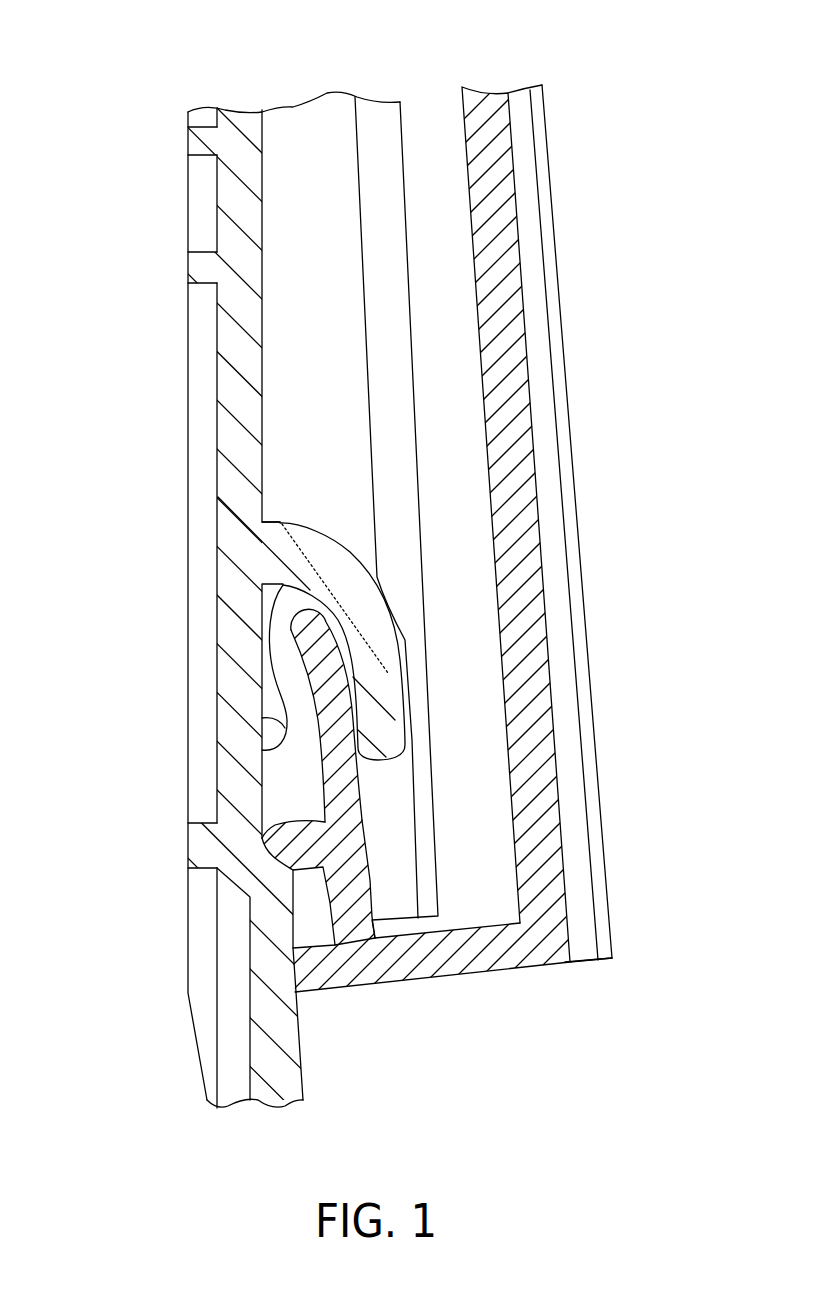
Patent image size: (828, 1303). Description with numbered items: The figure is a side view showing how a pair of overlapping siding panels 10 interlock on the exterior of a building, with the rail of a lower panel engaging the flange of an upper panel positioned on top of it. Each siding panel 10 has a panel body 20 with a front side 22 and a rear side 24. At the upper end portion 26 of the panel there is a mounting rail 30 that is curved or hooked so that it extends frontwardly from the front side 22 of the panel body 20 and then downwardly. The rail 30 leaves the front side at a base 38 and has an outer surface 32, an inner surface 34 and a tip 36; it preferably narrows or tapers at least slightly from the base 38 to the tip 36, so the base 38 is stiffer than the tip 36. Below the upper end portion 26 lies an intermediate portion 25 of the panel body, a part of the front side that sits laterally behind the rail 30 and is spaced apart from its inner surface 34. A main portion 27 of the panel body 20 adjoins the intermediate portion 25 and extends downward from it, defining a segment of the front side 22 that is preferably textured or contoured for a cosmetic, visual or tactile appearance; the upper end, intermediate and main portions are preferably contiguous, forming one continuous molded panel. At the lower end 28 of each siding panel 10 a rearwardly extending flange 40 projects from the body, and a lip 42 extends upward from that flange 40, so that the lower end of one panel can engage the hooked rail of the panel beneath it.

The siding panel 10 is at (135, 190).
The panel body 20 is at (243, 403).
The front side 22 is at (263, 273).
The rear side 24 is at (357, 117).
The intermediate portion 25 is at (262, 750).
The upper end portion 26 is at (270, 129).
The main portion 27 is at (575, 380).
The lower end 28 is at (588, 965).
The mounting rail 30 is at (315, 565).
The outer surface 32 is at (278, 522).
The inner surface 34 is at (297, 683).
The tip 36 is at (374, 762).
The base 38 is at (268, 555).
The rearwardly extending flange 40 is at (460, 955).
The lip 42 is at (333, 750).